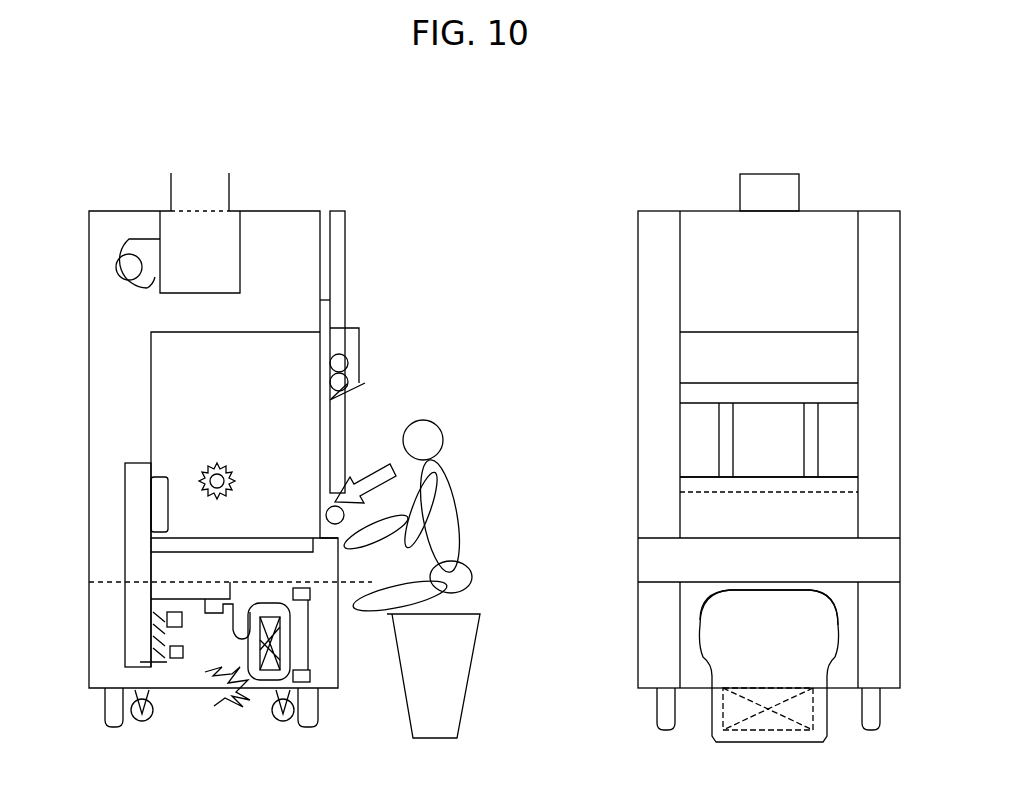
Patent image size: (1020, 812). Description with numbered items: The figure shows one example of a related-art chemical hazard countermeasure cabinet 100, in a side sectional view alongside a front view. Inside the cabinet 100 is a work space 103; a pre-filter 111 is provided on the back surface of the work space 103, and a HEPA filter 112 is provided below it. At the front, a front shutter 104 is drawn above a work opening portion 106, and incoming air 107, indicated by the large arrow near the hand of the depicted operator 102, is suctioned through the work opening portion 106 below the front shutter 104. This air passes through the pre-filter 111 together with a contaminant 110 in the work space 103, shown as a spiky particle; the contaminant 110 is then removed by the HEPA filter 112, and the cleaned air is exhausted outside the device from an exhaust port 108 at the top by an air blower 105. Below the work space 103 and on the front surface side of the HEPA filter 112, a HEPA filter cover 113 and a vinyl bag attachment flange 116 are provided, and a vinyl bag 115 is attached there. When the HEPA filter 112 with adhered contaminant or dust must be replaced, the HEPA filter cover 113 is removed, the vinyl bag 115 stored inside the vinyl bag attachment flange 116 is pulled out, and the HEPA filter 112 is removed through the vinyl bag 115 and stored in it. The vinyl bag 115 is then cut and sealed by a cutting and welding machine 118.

The chemical hazard countermeasure cabinet 100 is at (297, 211).
The user 102 is at (430, 425).
The work space 103 is at (208, 383).
The front shutter 104 is at (333, 436).
The air blower 105 is at (102, 267).
The work opening portion 106 is at (718, 517).
The incoming air 107 is at (368, 473).
The exhaust port 108 is at (169, 192).
The contaminant 110 is at (205, 470).
The pre-filter 111 is at (158, 505).
The HEPA filter 112 is at (155, 640).
The HEPA filter cover 113 is at (340, 635).
The vinyl bag 115 is at (230, 626).
The vinyl bag attachment flange 116 is at (710, 600).
The cutting and welding machine 118 is at (233, 698).